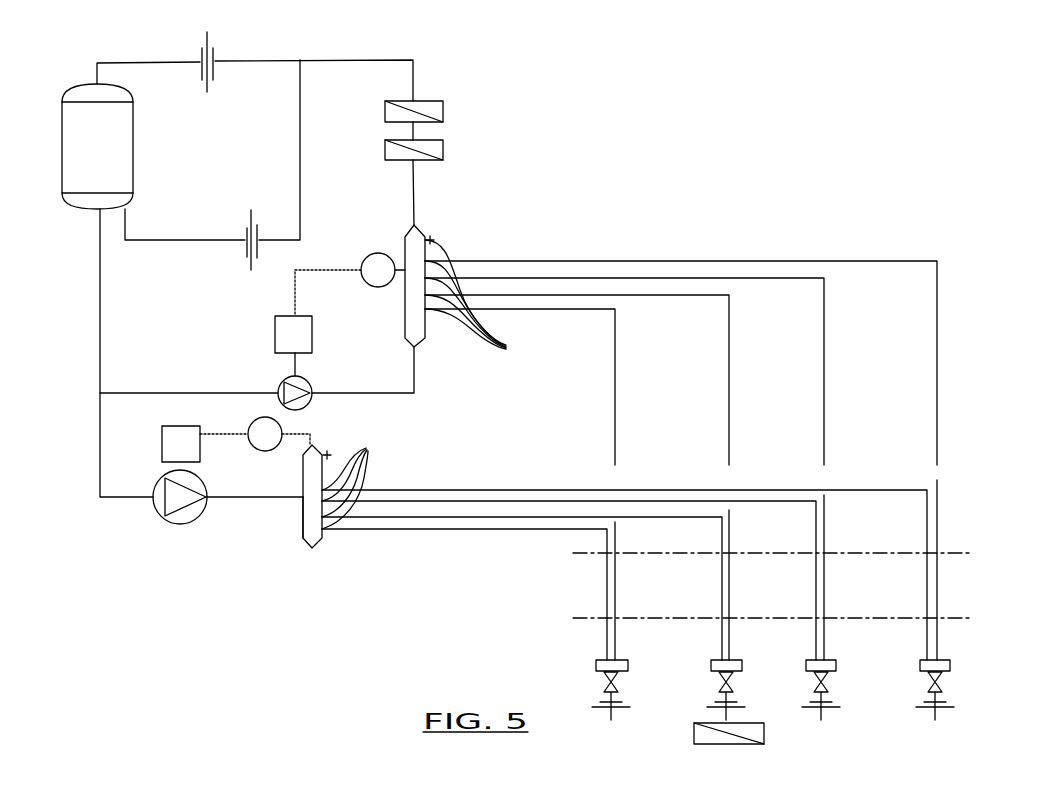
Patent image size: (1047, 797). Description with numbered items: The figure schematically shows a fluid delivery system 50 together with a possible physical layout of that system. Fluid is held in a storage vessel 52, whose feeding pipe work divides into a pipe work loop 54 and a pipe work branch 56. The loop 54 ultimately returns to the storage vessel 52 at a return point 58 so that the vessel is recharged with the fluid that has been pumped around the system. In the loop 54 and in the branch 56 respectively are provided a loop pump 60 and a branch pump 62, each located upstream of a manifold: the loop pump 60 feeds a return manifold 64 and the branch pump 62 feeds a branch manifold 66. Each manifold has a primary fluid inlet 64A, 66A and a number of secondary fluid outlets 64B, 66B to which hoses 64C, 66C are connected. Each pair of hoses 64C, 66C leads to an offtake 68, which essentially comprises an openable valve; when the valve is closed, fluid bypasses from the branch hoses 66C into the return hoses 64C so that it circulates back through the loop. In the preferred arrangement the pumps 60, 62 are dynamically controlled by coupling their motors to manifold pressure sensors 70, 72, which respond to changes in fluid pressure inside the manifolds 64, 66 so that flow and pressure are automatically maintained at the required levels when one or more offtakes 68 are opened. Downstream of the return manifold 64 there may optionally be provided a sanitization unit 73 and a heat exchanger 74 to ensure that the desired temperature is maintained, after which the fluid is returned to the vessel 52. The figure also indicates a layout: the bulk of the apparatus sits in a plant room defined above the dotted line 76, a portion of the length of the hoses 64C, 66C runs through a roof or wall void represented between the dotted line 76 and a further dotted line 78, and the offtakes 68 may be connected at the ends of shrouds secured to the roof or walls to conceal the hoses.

The fluid delivery system 50 is at (658, 133).
The storage vessel 52 is at (79, 131).
The pipe work loop 54 is at (173, 393).
The pipe work branch 56 is at (121, 498).
The return point 58 is at (97, 81).
The loop pump 60 is at (280, 380).
The branch pump 62 is at (169, 521).
The return manifold 64 is at (406, 255).
The primary fluid inlet of return manifold 64A is at (417, 348).
The secondary fluid outlets of return manifold 64B is at (485, 297).
The return manifold hoses 64C is at (563, 308).
The branch manifold 66 is at (311, 550).
The primary fluid inlet of branch manifold 66A is at (302, 504).
The secondary fluid outlets of branch manifold 66B is at (364, 483).
The branch manifold hoses 66C is at (395, 492).
The offtakes 68 is at (597, 665).
The manifold pressure sensor 70 is at (297, 279).
The manifold pressure sensor 72 is at (200, 442).
The sanitization unit 73 is at (437, 101).
The heat exchanger 74 is at (441, 150).
The dotted line 76 is at (957, 553).
The further dotted line 78 is at (957, 618).